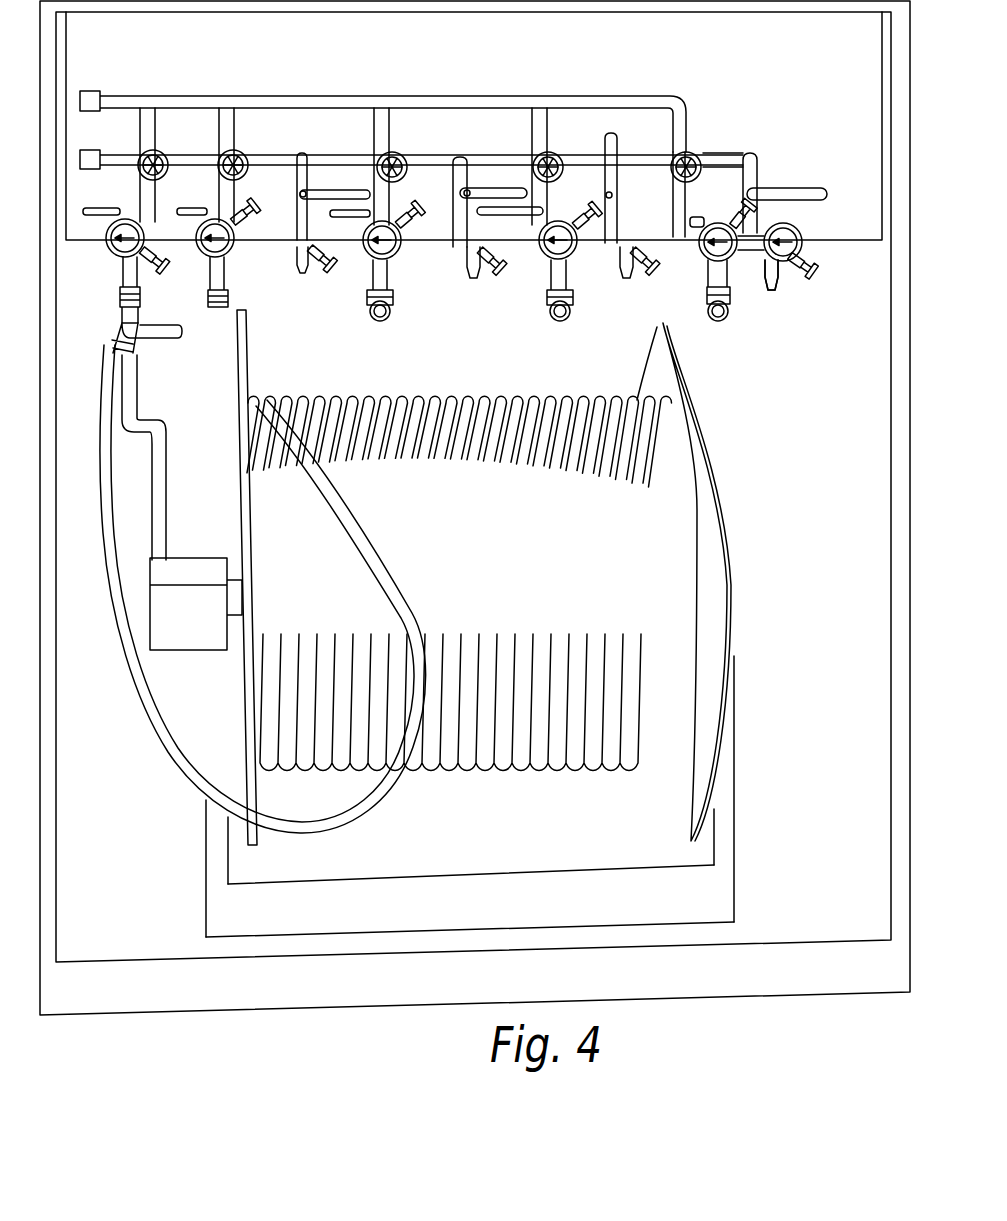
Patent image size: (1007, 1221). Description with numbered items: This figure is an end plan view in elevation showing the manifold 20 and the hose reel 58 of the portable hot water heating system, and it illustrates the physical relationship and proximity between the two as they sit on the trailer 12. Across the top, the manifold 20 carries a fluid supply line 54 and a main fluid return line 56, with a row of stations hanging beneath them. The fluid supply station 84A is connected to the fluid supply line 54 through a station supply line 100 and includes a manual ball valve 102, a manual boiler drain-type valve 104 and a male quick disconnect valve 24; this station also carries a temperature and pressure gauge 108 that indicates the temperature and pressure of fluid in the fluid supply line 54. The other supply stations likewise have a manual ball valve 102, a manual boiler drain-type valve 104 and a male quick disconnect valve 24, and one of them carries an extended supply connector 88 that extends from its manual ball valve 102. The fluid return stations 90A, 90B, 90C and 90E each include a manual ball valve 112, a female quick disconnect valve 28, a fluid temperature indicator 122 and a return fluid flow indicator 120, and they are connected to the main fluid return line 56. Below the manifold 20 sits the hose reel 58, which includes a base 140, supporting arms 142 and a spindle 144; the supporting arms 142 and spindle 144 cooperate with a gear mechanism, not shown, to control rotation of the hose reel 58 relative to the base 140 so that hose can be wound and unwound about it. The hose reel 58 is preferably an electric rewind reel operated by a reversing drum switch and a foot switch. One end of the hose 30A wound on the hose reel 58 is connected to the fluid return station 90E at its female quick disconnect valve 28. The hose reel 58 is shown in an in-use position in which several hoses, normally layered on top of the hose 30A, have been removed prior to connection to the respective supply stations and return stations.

The trailer 12 is at (915, 845).
The manifold 20 is at (584, 92).
The male quick disconnect valve 24 is at (300, 273).
The female quick disconnect valve 28 is at (118, 290).
The hose 30A is at (126, 660).
The fluid supply line 54 is at (707, 152).
The main fluid return line 56 is at (355, 92).
The hose reel 58 is at (726, 511).
The fluid supply station 84A is at (814, 283).
The extended supply connector 88 is at (173, 443).
The fluid return station 90A is at (722, 327).
The fluid return station 90B is at (555, 324).
The fluid return station 90C is at (374, 323).
The fluid return station 90E is at (113, 315).
The station supply line 100 is at (755, 153).
The manual ball valve 102 is at (333, 187).
The manual boiler drain-type valve 104 is at (325, 272).
The temperature and pressure gauge 108 is at (803, 224).
The manual ball valve 112 is at (122, 207).
The return fluid flow indicator 120 is at (155, 150).
The fluid temperature indicator 122 is at (115, 257).
The base 140 is at (734, 897).
The supporting arms 142 is at (208, 843).
The spindle 144 is at (232, 580).